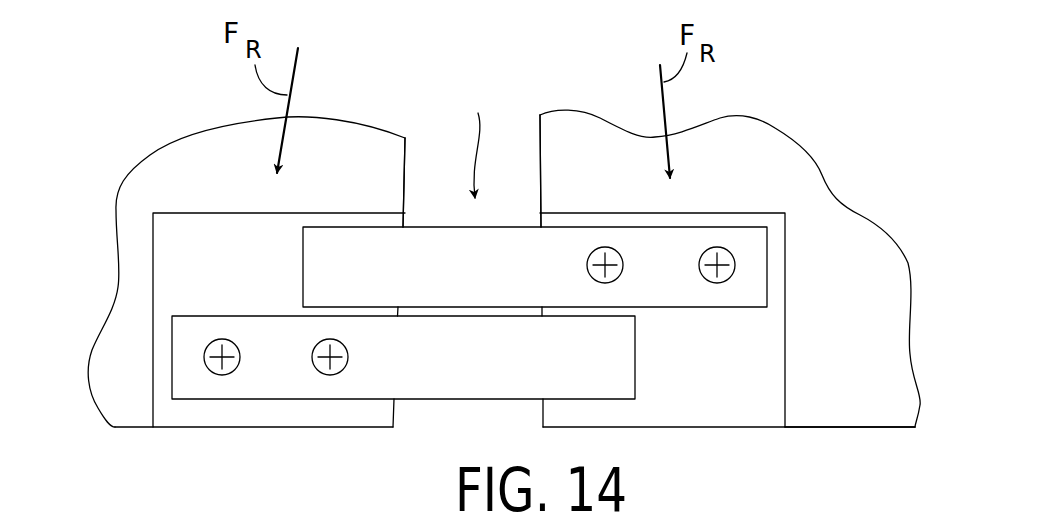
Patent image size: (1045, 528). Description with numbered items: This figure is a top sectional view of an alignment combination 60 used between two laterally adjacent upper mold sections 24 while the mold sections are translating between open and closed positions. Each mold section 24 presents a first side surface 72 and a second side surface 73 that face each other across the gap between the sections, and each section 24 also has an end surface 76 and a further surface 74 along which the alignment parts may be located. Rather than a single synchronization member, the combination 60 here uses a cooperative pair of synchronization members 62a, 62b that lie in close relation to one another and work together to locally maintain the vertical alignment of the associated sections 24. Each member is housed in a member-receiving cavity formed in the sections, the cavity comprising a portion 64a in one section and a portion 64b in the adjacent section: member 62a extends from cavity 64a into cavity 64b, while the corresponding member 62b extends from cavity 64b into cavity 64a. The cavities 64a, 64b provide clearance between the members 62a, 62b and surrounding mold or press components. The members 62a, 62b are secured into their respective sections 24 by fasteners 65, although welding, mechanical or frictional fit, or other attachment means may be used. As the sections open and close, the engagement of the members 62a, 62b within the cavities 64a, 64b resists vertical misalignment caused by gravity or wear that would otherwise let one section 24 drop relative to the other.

The upper mold section 24 is at (145, 167).
The alignment combination 60 is at (422, 414).
The synchronization member 62a is at (273, 379).
The synchronization member 62b is at (747, 233).
The member-receiving cavity 64a is at (167, 414).
The member-receiving cavity 64b is at (712, 416).
The fasteners 65 is at (203, 351).
The first side surface 72 is at (405, 175).
The second side surface 73 is at (538, 168).
The surface 74 is at (897, 427).
The end surface 76 is at (229, 186).